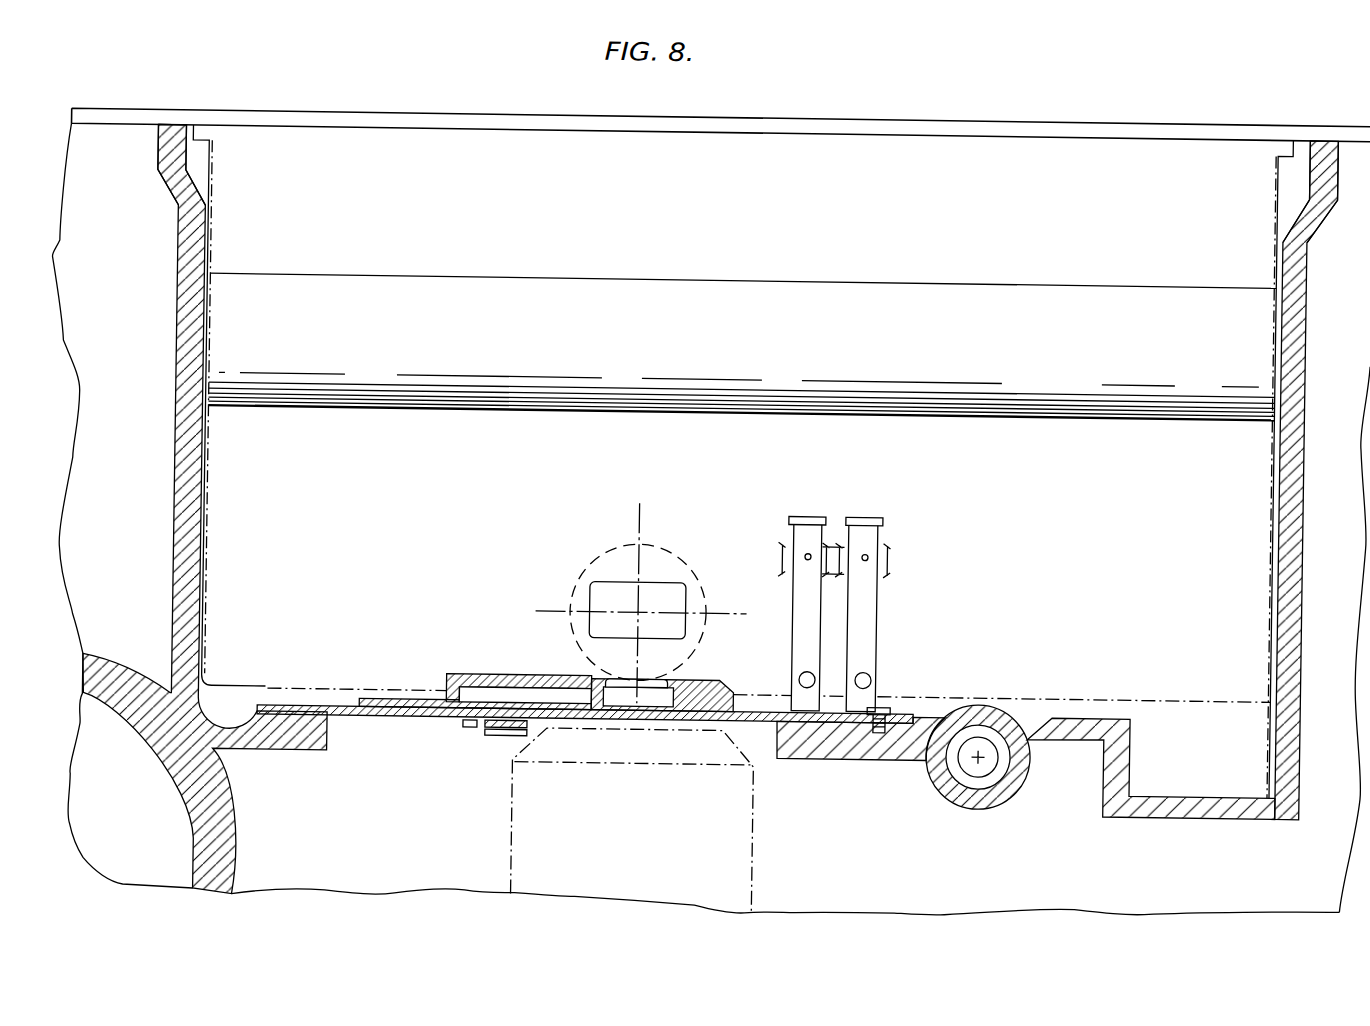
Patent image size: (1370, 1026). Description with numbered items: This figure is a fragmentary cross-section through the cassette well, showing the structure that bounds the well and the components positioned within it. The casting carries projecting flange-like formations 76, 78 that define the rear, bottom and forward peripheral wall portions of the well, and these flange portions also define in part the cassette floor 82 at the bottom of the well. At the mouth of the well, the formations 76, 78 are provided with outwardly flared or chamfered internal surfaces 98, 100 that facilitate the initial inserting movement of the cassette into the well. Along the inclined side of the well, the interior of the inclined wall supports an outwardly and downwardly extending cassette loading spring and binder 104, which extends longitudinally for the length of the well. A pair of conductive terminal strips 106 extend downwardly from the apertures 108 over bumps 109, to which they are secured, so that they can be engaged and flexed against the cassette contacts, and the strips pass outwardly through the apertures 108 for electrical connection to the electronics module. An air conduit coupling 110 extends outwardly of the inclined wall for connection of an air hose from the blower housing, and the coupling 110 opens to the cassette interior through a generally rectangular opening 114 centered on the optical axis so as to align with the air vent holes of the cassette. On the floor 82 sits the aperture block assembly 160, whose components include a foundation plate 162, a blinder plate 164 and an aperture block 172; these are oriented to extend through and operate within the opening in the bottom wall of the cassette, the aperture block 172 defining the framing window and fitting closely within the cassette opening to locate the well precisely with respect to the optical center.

The flange-like formation 76 is at (1289, 423).
The flange-like formation 78 is at (183, 468).
The cassette floor 82 is at (958, 714).
The chamfered internal surface 98 is at (1293, 201).
The chamfered internal surface 100 is at (192, 195).
The cassette loading spring and binder 104 is at (956, 369).
The conductive terminal strips 106 is at (864, 675).
The apertures 108 is at (868, 515).
The bumps 109 is at (888, 556).
The air conduit coupling 110 is at (666, 549).
The rectangular opening 114 is at (666, 583).
The aperture block assembly 160 is at (688, 665).
The foundation plate 162 is at (355, 716).
The blinder plate 164 is at (427, 704).
The aperture block 172 is at (562, 679).